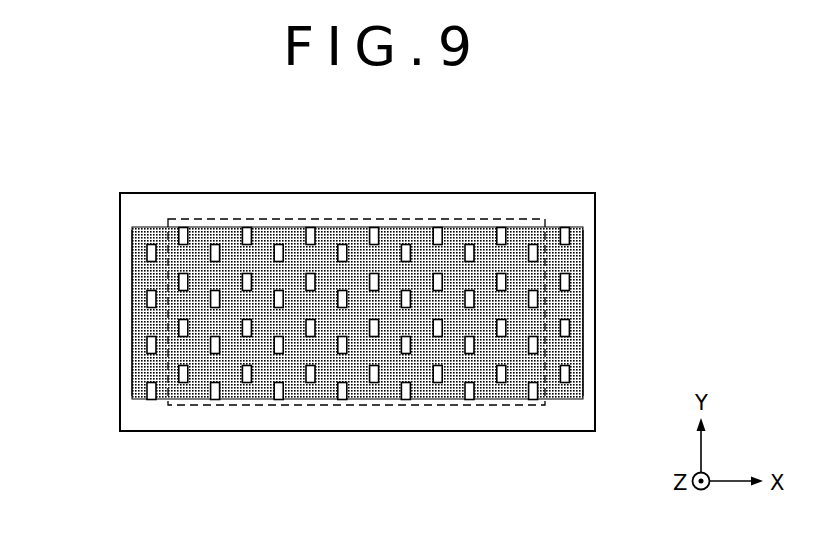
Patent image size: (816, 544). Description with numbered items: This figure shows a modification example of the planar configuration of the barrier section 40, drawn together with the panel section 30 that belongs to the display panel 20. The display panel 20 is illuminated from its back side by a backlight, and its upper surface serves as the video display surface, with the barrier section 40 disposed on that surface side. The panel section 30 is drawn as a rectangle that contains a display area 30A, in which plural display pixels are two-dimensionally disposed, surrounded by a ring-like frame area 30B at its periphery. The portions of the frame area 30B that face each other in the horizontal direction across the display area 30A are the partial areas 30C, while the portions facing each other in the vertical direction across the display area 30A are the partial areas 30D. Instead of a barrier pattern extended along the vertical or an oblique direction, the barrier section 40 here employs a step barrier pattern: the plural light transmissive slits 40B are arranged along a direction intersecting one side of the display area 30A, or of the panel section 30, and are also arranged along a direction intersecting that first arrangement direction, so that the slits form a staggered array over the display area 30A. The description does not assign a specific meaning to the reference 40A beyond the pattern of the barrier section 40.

The display panel 20 is at (648, 168).
The panel section 30 is at (608, 219).
The display area 30A is at (485, 207).
The frame area 30B is at (406, 187).
The partial area 30C is at (127, 342).
The partial area 30D is at (193, 185).
The barrier section 40 is at (357, 376).
The insulating layer 40A is at (421, 396).
The light transmissive slits 40B is at (468, 396).